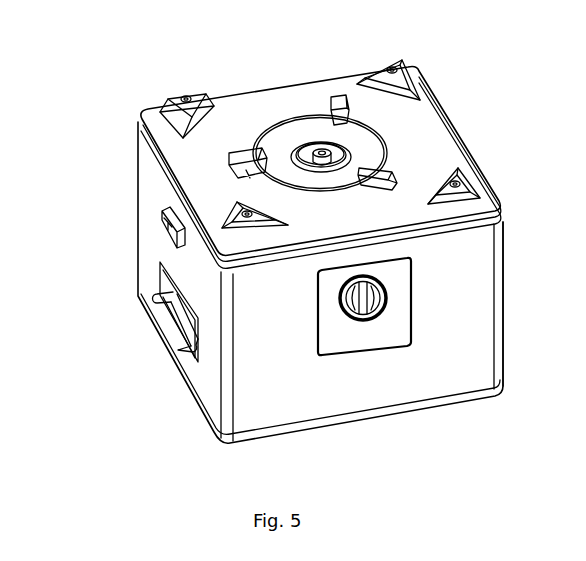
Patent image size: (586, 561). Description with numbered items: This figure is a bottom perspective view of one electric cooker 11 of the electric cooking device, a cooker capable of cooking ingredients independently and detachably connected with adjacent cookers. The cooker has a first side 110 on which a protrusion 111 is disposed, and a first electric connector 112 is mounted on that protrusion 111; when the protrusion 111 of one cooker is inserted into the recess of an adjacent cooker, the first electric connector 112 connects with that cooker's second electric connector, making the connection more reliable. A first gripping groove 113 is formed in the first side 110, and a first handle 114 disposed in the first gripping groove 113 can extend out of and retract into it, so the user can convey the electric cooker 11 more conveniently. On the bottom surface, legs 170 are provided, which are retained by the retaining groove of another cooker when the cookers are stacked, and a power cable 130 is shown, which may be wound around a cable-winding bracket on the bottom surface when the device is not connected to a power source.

The electric cooker 11 is at (281, 55).
The first side 110 is at (209, 377).
The protrusion 111 is at (165, 209).
The first electric connector 112 is at (164, 226).
The first gripping groove 113 is at (187, 323).
The first handle 114 is at (160, 300).
The power cable 130 is at (378, 170).
The legs 170 is at (176, 95).